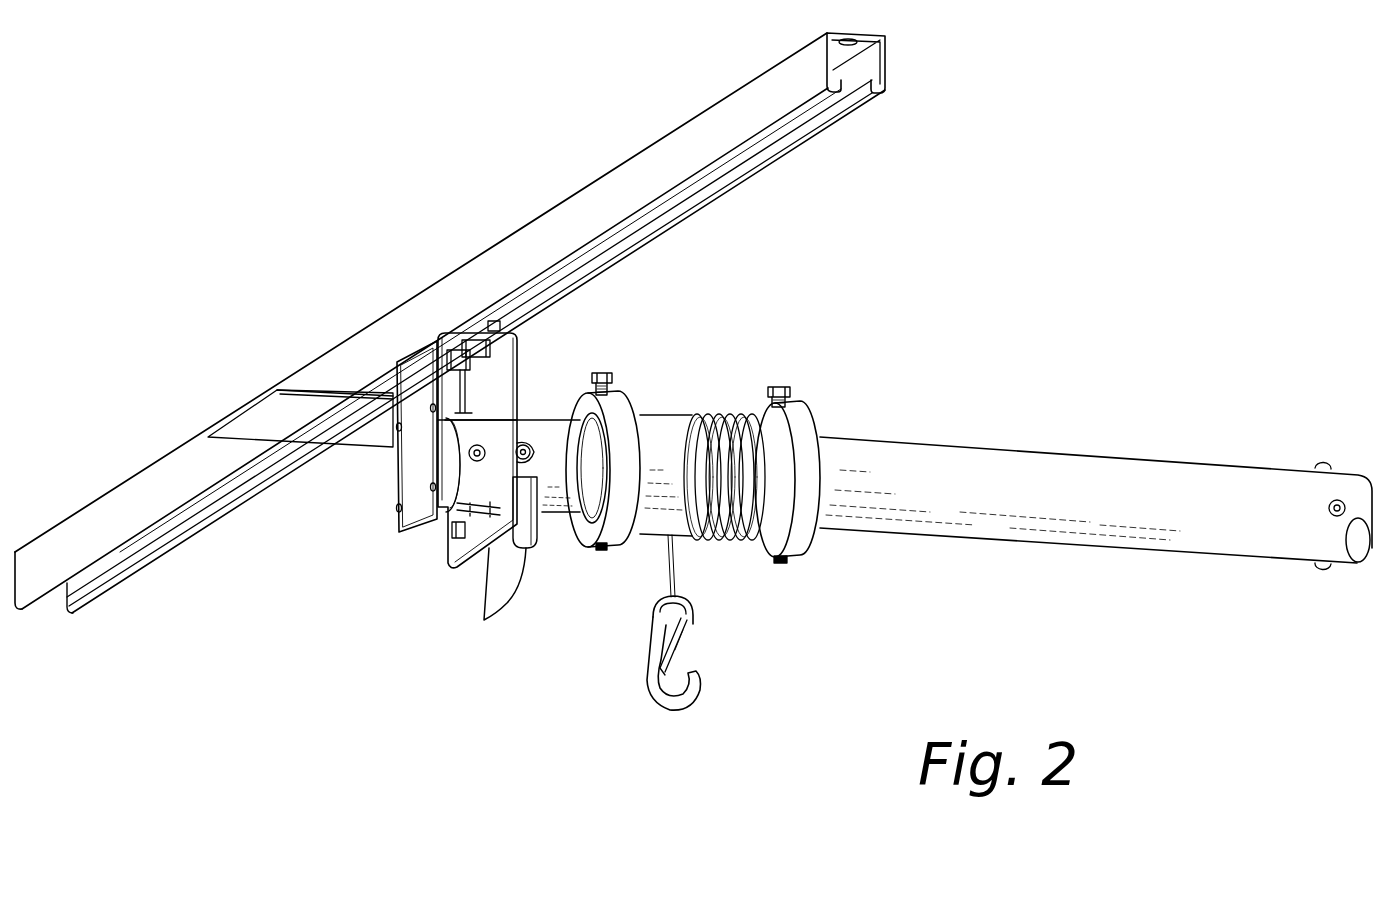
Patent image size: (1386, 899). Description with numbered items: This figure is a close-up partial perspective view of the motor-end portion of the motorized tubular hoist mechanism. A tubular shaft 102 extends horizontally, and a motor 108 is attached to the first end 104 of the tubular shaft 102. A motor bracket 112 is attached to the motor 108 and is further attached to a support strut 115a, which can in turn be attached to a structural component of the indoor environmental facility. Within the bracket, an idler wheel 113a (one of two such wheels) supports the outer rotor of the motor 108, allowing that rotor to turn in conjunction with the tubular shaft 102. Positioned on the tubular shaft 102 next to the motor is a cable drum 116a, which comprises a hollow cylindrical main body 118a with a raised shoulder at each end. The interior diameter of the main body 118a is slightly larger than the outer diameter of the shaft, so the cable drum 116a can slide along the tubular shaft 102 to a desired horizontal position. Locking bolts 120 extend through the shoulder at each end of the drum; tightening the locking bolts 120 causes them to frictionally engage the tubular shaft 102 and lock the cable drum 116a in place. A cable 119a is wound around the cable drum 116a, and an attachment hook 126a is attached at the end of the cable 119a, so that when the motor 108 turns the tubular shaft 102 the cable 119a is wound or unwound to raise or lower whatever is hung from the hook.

The tubular shaft 102 is at (1096, 471).
The first end 104 is at (545, 603).
The motor 108 is at (545, 452).
The motor bracket 112 is at (403, 477).
The idler wheel 113a is at (504, 600).
The support strut 115a is at (607, 180).
The cable drum 116a is at (817, 357).
The hollow cylindrical main body 118a is at (765, 507).
The cable 119a is at (717, 540).
The locking bolts 120 is at (614, 376).
The attachment hook 126a is at (695, 712).